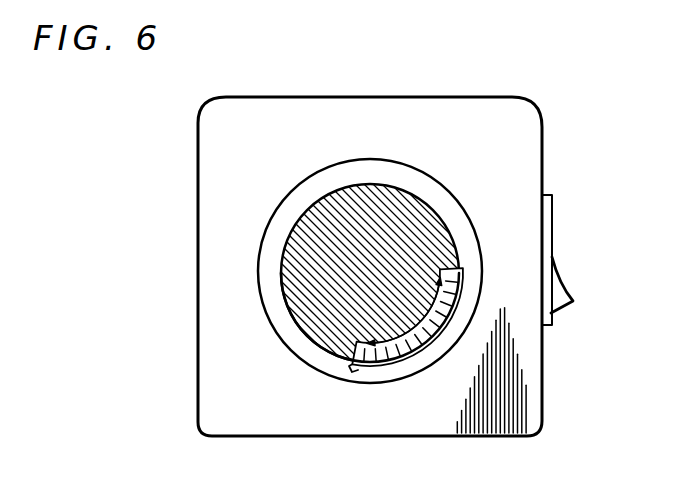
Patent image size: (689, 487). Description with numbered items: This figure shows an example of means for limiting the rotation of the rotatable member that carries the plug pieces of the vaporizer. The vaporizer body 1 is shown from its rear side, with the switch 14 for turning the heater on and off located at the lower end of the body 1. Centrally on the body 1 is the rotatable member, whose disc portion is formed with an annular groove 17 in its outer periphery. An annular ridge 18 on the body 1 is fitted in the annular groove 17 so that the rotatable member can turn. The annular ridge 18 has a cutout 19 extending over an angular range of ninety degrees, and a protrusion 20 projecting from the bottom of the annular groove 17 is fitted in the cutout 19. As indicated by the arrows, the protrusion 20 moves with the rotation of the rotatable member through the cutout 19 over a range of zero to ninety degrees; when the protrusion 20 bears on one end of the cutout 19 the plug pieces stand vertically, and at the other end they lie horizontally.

The vaporizer body 1 is at (538, 396).
The switch 14 is at (565, 287).
The annular groove 17 is at (303, 333).
The annular ridge 18 is at (415, 183).
The cutout 19 is at (439, 336).
The protrusion 20 is at (356, 366).